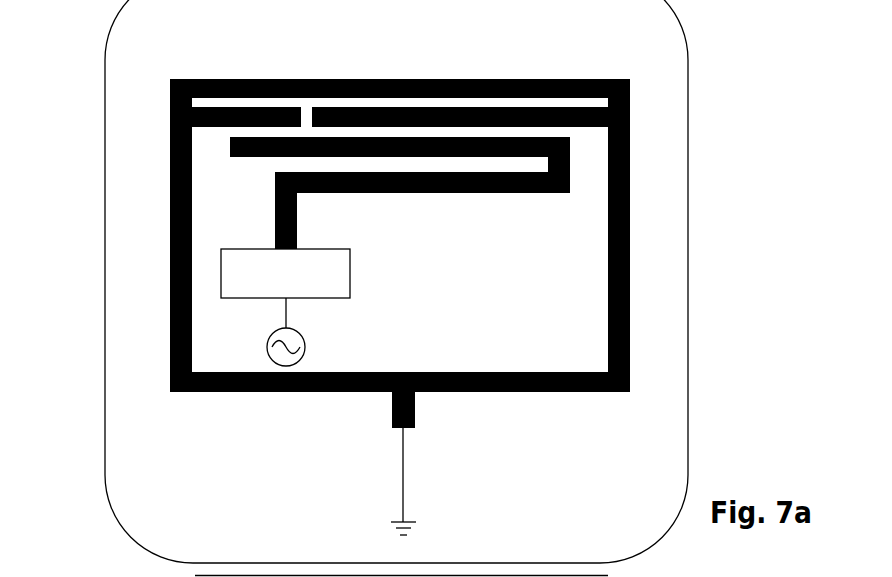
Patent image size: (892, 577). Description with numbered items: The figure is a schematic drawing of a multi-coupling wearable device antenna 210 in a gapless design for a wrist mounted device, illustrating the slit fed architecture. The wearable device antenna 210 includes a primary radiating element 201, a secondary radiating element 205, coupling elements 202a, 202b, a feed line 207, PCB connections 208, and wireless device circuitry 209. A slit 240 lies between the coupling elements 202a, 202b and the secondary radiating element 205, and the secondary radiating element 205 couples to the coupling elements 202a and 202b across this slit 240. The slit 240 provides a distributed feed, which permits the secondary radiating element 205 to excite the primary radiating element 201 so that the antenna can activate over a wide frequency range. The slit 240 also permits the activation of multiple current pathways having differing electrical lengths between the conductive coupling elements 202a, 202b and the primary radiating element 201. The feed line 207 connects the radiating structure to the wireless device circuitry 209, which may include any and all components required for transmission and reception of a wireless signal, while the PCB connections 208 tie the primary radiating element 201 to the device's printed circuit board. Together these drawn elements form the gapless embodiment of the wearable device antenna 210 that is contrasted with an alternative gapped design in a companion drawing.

The primary radiating element 201 is at (630, 128).
The coupling element 202a is at (170, 108).
The coupling element 202b is at (585, 127).
The secondary radiating element 205 is at (475, 195).
The feed line 207 is at (297, 221).
The PCB connections 208 is at (388, 412).
The wireless device circuitry 209 is at (298, 310).
The wearable device antenna 210 is at (449, 281).
The slit 240 is at (242, 133).